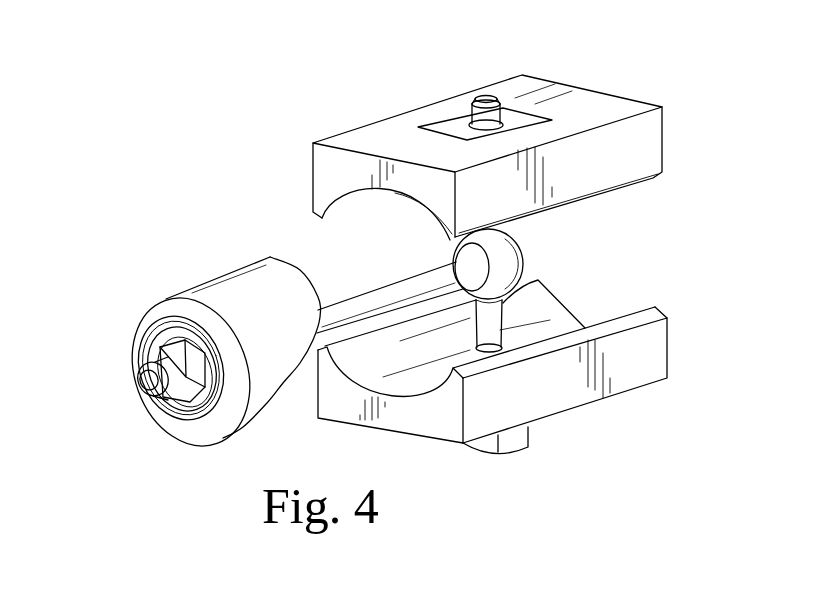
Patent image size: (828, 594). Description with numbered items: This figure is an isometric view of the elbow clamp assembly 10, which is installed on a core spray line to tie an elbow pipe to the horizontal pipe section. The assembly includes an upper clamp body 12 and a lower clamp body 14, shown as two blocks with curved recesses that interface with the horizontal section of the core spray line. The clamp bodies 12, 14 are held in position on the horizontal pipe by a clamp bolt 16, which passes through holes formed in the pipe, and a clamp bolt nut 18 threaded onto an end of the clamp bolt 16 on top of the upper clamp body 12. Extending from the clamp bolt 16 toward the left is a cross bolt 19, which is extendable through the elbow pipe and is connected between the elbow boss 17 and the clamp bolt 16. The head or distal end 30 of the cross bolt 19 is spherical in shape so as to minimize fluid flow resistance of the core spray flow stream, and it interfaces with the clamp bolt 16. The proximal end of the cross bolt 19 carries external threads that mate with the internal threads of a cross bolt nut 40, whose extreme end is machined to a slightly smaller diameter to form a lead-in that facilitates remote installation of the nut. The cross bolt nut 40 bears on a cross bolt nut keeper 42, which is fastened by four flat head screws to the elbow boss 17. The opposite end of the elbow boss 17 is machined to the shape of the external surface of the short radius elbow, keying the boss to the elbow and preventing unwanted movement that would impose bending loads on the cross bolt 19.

The elbow clamp assembly 10 is at (207, 114).
The upper clamp body 12 is at (593, 107).
The lower clamp body 14 is at (557, 403).
The clamp bolt 16 is at (490, 327).
The elbow boss 17 is at (192, 432).
The clamp bolt nut 18 is at (453, 128).
The cross bolt 19 is at (362, 300).
The head of the cross bolt 30 is at (517, 257).
The cross bolt nut 40 is at (157, 360).
The cross bolt nut keeper 42 is at (158, 322).